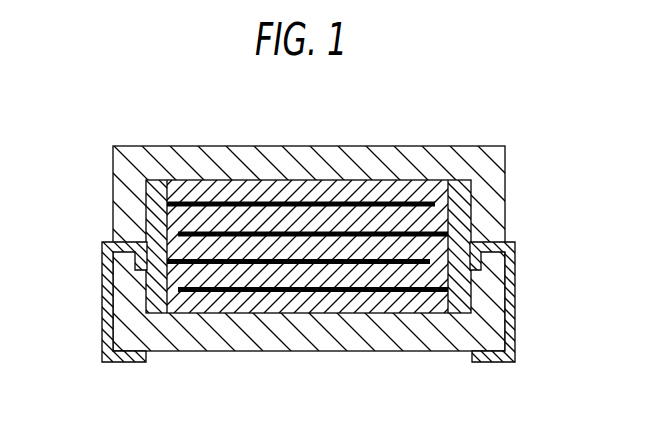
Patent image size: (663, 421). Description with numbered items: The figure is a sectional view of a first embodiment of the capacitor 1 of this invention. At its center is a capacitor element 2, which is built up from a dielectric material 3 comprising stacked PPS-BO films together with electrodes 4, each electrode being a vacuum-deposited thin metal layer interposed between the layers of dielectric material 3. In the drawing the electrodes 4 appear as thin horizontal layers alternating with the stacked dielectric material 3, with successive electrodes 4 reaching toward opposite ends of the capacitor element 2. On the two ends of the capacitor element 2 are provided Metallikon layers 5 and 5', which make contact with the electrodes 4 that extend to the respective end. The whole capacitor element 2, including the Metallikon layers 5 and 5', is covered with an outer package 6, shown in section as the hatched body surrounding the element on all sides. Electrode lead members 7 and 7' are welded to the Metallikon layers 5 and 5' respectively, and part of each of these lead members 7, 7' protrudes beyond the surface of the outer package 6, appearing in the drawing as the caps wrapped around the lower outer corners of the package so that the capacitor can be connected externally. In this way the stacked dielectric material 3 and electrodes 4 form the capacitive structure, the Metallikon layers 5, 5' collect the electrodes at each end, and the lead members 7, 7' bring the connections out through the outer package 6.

The chip capacitor 1 is at (362, 140).
The capacitor element 2 is at (275, 178).
The dielectric material 3 is at (430, 185).
The electrodes 4 is at (190, 184).
The Metallikon layer 5 is at (154, 246).
The Metallikon layer 5' is at (453, 246).
The outer package 6 is at (484, 149).
The electrode lead member 7 is at (133, 302).
The electrode lead member 7' is at (492, 302).